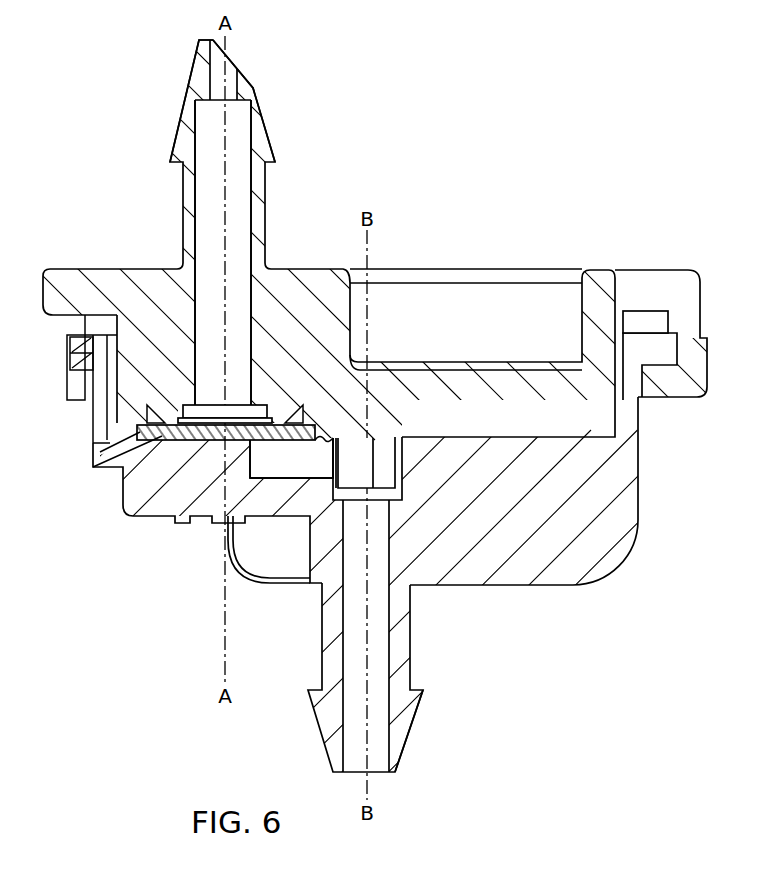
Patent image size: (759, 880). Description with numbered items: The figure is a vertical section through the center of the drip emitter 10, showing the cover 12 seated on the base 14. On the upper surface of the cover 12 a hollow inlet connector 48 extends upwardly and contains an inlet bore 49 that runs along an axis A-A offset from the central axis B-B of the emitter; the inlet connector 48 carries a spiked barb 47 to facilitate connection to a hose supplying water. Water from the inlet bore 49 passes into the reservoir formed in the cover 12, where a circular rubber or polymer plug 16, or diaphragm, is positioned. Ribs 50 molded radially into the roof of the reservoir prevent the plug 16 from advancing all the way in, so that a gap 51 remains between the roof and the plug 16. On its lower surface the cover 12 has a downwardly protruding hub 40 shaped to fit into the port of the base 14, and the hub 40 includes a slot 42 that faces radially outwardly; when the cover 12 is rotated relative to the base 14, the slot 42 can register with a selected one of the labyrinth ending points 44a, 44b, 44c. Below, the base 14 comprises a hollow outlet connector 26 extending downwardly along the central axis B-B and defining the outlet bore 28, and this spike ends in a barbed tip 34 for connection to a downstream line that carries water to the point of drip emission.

The drip emitter 10 is at (505, 166).
The cover 12 is at (290, 281).
The base 14 is at (162, 498).
The plug 16 is at (93, 468).
The outlet connector 26 is at (330, 650).
The outlet bore 28 is at (378, 643).
The barbed tip 34 is at (413, 700).
The hub 40 is at (383, 457).
The slot 42 is at (357, 470).
The ending point 44a is at (273, 460).
The ending point 44b is at (291, 459).
The ending point 44c is at (291, 458).
The spiked barb 47 is at (182, 152).
The inlet connector 48 is at (266, 148).
The inlet bore 49 is at (220, 190).
The ribs 50 is at (164, 418).
The gap 51 is at (244, 410).